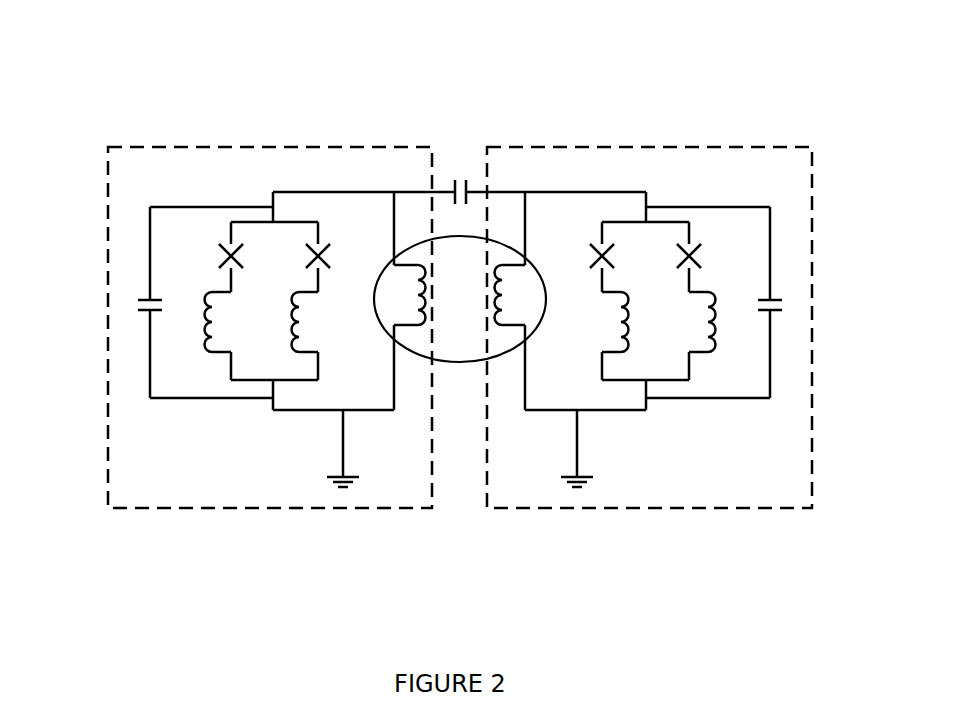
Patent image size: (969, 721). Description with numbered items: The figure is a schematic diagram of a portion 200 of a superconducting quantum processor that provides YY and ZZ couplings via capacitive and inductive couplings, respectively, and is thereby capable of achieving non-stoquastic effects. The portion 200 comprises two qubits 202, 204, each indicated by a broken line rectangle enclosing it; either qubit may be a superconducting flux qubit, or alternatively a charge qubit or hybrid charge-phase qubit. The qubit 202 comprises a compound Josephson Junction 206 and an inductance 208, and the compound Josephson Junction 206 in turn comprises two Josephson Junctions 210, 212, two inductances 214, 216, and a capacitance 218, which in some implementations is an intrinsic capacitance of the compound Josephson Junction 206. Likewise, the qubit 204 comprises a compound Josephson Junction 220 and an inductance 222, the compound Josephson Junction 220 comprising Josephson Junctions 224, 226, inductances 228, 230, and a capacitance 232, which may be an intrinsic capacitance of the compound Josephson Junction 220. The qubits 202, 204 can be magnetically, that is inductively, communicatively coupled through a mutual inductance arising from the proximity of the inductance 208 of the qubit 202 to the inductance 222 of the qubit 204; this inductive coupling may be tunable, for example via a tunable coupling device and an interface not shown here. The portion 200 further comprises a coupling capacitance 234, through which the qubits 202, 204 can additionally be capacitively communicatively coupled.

The portion of superconducting quantum processor 200 is at (676, 64).
The qubit 202 is at (108, 173).
The qubit 204 is at (812, 181).
The compound Josephson Junction 206 is at (253, 327).
The inductance 208 is at (412, 340).
The Josephson Junction 210 is at (208, 251).
The Josephson Junction 212 is at (340, 242).
The inductance 214 is at (183, 347).
The inductance 216 is at (324, 335).
The capacitance 218 is at (120, 305).
The compound Josephson Junction 220 is at (671, 328).
The inductance 222 is at (505, 340).
The Josephson Junction 224 is at (583, 243).
The Josephson Junction 226 is at (710, 256).
The inductance 228 is at (598, 335).
The inductance 230 is at (732, 332).
The capacitance 232 is at (800, 305).
The coupling capacitance 234 is at (463, 163).